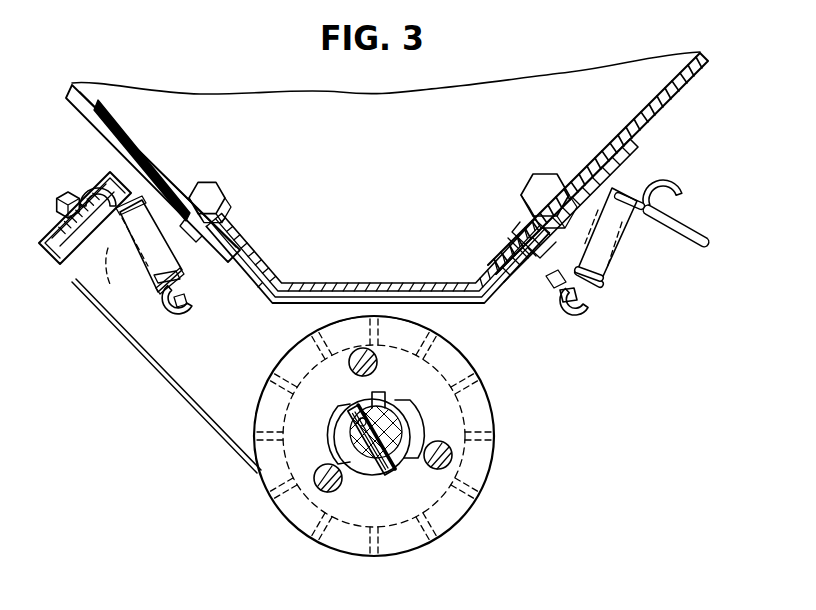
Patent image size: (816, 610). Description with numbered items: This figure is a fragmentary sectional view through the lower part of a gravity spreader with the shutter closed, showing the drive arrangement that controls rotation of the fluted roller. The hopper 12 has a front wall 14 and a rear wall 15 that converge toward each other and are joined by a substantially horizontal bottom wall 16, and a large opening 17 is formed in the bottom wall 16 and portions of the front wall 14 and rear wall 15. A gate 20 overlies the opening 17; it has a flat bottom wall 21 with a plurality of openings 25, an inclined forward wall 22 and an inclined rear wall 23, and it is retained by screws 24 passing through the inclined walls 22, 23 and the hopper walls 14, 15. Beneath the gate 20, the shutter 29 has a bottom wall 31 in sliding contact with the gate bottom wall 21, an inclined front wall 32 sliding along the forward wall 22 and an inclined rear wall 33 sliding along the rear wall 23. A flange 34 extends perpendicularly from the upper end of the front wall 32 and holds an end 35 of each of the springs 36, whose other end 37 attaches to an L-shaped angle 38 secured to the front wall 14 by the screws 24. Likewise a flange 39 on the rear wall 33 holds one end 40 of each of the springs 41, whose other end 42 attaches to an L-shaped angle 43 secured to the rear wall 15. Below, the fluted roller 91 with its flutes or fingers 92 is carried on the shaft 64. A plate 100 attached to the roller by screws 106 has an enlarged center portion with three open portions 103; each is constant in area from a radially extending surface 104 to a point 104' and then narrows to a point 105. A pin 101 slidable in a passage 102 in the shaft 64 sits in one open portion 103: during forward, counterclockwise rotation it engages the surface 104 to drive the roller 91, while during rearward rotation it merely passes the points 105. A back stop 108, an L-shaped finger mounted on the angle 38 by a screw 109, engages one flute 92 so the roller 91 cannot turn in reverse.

The hopper 12 is at (712, 69).
The front wall 14 is at (85, 122).
The rear wall 15 is at (684, 93).
The bottom wall 16 is at (438, 312).
The opening 17 is at (520, 247).
The gate 20 is at (377, 277).
The bottom wall 21 is at (452, 284).
The inclined forward wall 22 is at (245, 237).
The inclined rear wall 23 is at (505, 257).
The screws 24 is at (218, 195).
The openings 25 is at (427, 284).
The shutter 29 is at (287, 305).
The bottom wall 31 is at (443, 292).
The inclined front wall 32 is at (262, 285).
The inclined rear wall 33 is at (498, 262).
The flange 34 is at (206, 290).
The end 35 is at (165, 318).
The springs 36 is at (145, 249).
The other end 37 is at (100, 188).
The L-shaped angle 38 is at (72, 280).
The flange 39 is at (549, 292).
The end 40 is at (588, 314).
The springs 41 is at (614, 268).
The other end 42 is at (680, 190).
The L-shaped angle 43 is at (694, 238).
The shaft 64 is at (396, 404).
The fluted roller 91 is at (355, 558).
The flutes or fingers 92 is at (398, 550).
The plate 100 is at (470, 512).
The pin 101 is at (384, 480).
The passage 102 is at (352, 426).
The open portions 103 is at (345, 443).
The radially extending surface 104 is at (401, 395).
The point 104' is at (345, 491).
The point 105 is at (372, 405).
The screws 106 is at (460, 452).
The back stop 108 is at (185, 388).
The screw 109 is at (62, 203).